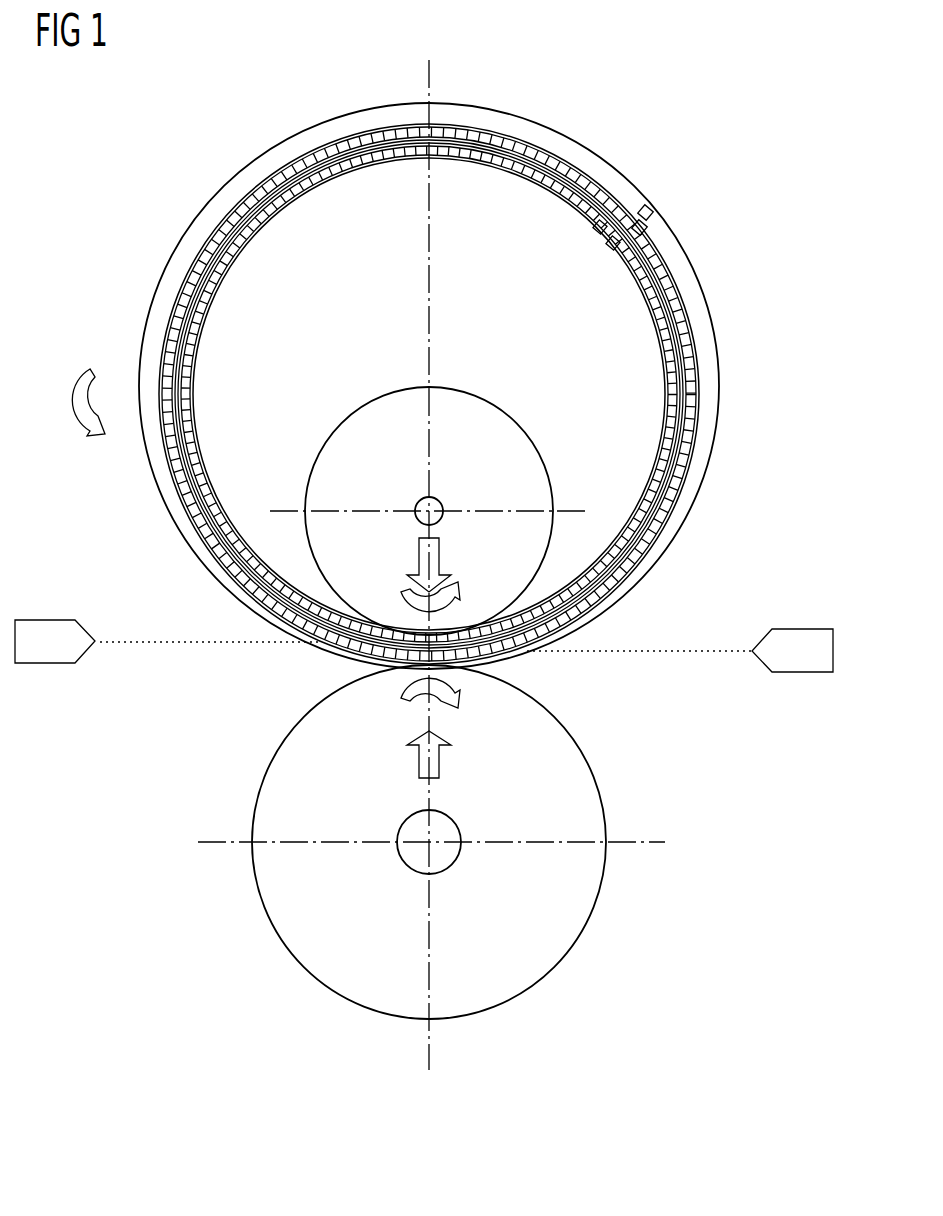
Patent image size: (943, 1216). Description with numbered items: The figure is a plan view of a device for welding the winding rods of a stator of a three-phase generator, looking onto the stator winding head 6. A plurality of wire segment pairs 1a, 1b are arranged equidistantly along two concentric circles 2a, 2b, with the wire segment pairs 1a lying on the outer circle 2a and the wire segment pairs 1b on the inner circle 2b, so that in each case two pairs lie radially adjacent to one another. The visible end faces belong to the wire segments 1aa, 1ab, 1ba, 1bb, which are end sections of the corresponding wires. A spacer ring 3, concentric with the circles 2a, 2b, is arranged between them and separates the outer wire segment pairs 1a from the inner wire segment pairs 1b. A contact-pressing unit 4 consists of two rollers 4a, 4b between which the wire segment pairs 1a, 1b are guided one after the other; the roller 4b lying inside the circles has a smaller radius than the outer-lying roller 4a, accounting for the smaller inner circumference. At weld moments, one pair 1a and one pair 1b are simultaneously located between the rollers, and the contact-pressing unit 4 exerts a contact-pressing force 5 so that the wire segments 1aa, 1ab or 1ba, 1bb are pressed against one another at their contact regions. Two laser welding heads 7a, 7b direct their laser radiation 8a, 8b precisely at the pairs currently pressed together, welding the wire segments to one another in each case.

The wire segment pair 1a is at (438, 394).
The wire segment pair 1b is at (429, 394).
The wire segment 1aa is at (645, 213).
The wire segment 1ab is at (640, 228).
The wire segment 1ba is at (600, 227).
The wire segment 1bb is at (613, 243).
The outer circle 2a is at (524, 143).
The inner circle 2b is at (508, 170).
The spacer ring 3 is at (638, 535).
The contact-pressing unit 4 is at (436, 842).
The roller 4a is at (583, 890).
The roller 4b is at (512, 467).
The contact-pressing force 5 is at (440, 562).
The stator winding head 6 is at (703, 460).
The laser welding head 7a is at (47, 655).
The laser welding head 7b is at (812, 655).
The laser radiation 8a is at (150, 648).
The laser radiation 8b is at (703, 655).